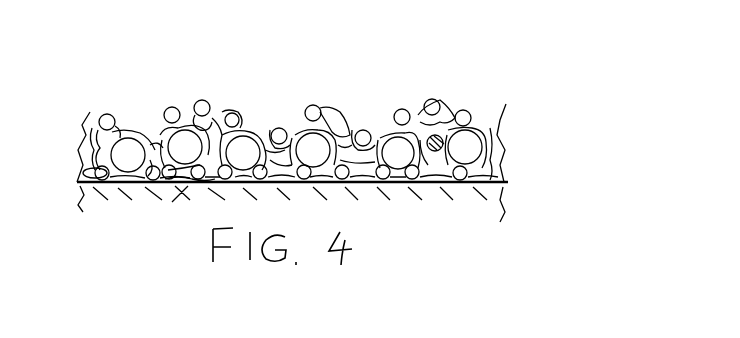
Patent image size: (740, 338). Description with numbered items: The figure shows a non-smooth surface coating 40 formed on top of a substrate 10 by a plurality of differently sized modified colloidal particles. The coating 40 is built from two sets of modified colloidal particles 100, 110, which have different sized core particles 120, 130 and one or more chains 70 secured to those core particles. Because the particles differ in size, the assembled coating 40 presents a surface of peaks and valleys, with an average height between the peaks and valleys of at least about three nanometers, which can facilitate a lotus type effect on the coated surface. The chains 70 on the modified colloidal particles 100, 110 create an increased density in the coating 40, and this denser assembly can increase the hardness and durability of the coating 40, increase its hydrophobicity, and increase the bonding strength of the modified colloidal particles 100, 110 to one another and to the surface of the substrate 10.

The substrate 10 is at (432, 183).
The coating 40 is at (387, 97).
The chains 70 is at (333, 107).
The modified colloidal particles 100 is at (126, 148).
The modified colloidal particles 110 is at (203, 103).
The core particle 120 is at (243, 148).
The core particle 130 is at (186, 186).